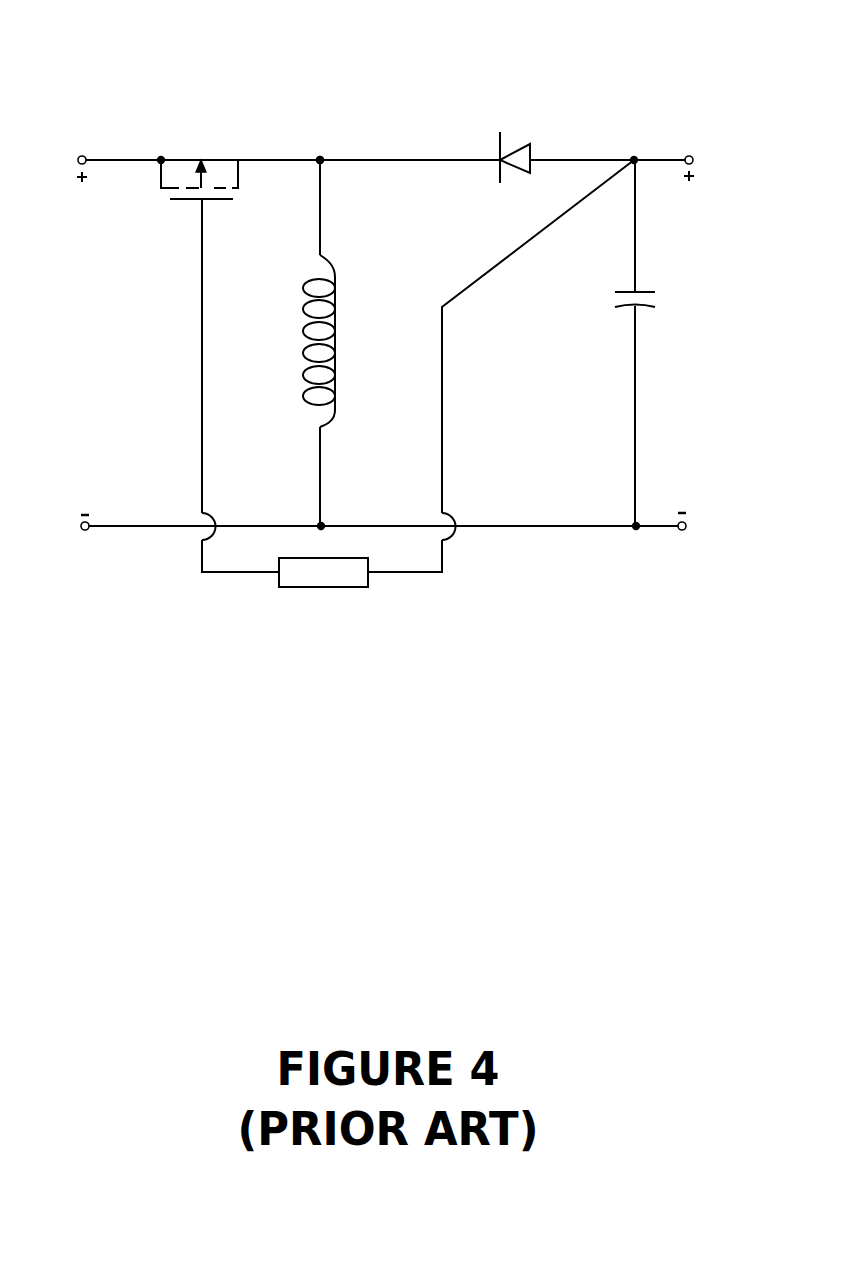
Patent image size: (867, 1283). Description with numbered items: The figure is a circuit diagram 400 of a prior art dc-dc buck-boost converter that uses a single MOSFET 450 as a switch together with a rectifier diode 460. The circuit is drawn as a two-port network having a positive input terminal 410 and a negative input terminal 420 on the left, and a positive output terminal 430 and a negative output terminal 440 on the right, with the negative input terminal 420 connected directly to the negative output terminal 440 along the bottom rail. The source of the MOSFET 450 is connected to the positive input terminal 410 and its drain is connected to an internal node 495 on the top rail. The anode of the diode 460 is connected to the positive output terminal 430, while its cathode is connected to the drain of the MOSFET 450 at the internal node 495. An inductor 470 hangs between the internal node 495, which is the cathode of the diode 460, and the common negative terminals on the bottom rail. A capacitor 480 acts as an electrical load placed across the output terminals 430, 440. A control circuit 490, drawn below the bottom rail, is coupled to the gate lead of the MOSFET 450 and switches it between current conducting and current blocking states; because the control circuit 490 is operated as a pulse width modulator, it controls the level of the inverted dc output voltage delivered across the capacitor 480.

The circuit diagram 400 is at (88, 33).
The positive input terminal 410 is at (75, 156).
The negative input terminal 420 is at (73, 530).
The positive output terminal 430 is at (700, 154).
The negative output terminal 440 is at (690, 528).
The MOSFET 450 is at (160, 198).
The rectifier diode 460 is at (537, 146).
The inductor 470 is at (344, 385).
The capacitor 480 is at (657, 298).
The control circuit 490 is at (341, 582).
The internal node 495 is at (321, 157).